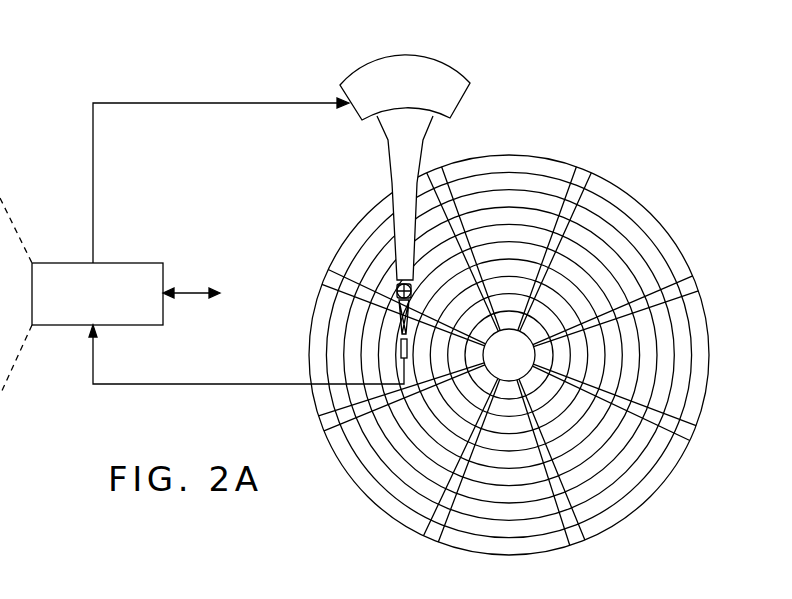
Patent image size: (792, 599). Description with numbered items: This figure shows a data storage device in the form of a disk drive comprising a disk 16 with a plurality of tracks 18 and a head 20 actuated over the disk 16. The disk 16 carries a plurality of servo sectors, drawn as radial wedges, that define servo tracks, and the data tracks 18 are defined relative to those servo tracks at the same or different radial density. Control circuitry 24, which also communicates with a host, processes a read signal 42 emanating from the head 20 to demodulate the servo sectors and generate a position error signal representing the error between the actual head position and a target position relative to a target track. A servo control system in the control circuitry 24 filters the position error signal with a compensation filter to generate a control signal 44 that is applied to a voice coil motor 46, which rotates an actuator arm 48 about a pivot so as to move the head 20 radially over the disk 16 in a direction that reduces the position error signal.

The disk 16 is at (645, 204).
The tracks 18 is at (512, 172).
The head 20 is at (397, 357).
The control circuitry 24 is at (129, 263).
The read signal 42 is at (218, 384).
The control signal 44 is at (93, 178).
The voice coil motor 46 is at (354, 110).
The actuator arm 48 is at (390, 185).